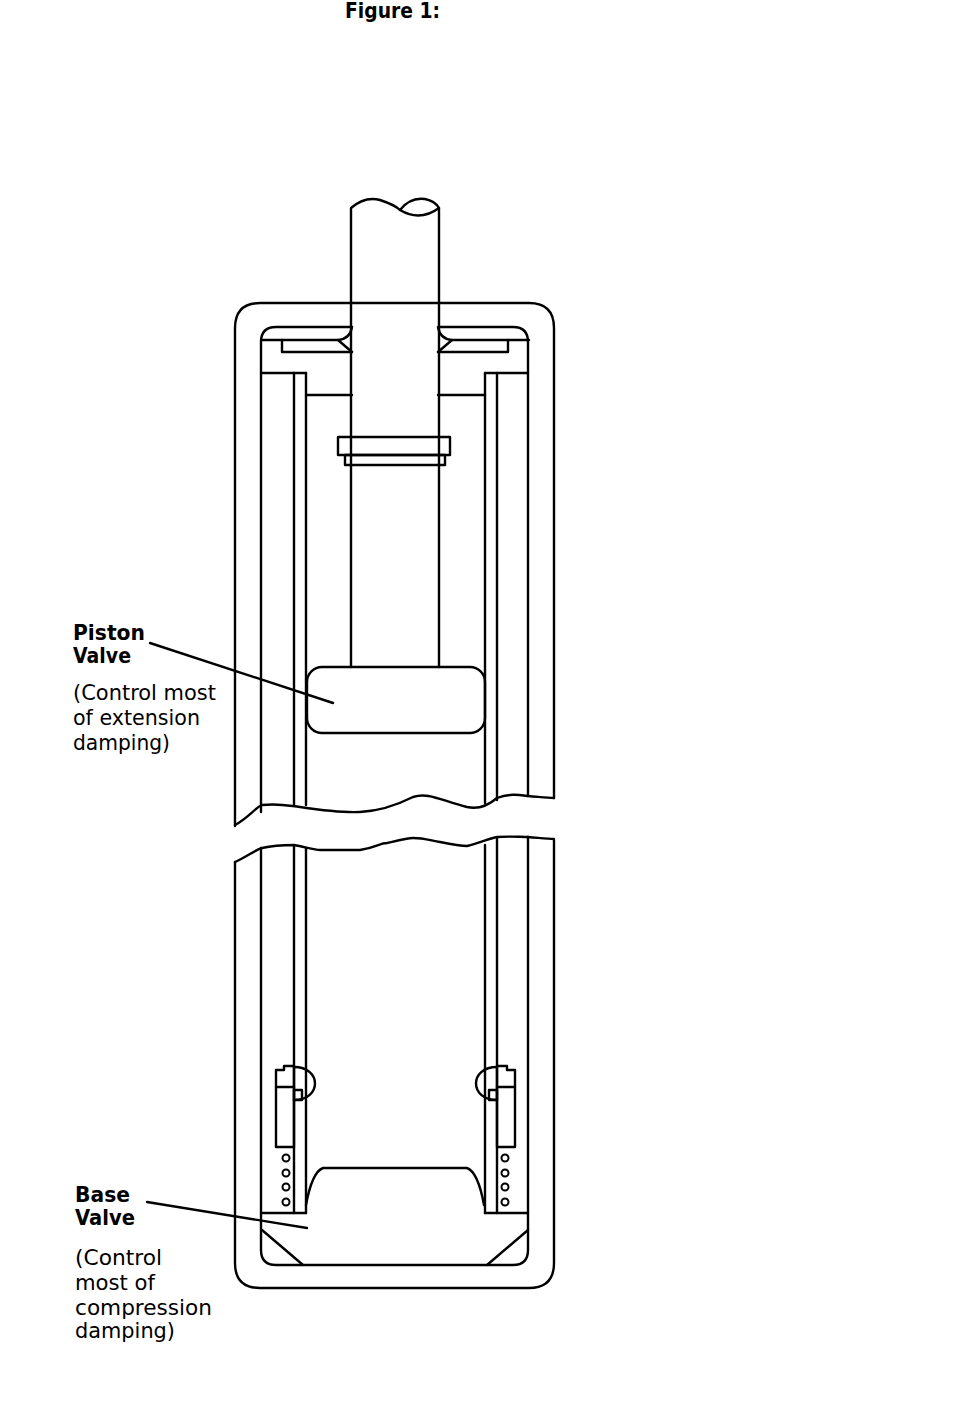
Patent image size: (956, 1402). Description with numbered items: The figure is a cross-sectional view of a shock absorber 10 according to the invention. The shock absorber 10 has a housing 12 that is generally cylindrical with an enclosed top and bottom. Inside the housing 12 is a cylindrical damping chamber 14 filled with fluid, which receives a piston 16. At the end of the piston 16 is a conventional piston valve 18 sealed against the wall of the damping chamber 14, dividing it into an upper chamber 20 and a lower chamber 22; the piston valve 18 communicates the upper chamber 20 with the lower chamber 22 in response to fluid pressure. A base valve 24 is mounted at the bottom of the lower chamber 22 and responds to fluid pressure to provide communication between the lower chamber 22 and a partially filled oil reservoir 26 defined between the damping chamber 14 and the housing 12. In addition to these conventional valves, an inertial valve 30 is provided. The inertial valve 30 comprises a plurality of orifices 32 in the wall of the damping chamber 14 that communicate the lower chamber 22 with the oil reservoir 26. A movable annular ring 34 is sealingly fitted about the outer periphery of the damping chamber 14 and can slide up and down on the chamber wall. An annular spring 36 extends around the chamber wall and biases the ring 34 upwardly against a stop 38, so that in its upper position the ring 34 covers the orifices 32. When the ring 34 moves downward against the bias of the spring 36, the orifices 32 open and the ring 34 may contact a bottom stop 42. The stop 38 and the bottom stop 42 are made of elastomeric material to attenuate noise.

The shock absorber 10 is at (212, 295).
The housing 12 is at (542, 722).
The damping chamber 14 is at (492, 943).
The piston 16 is at (417, 265).
The piston valve 18 is at (460, 693).
The upper chamber 20 is at (457, 515).
The lower chamber 22 is at (398, 1023).
The base valve 24 is at (398, 1243).
The oil reservoir 26 is at (510, 1008).
The inertial valve 30 is at (533, 1104).
The orifices 32 is at (305, 1068).
The annular ring 34 is at (508, 1140).
The spring 36 is at (508, 1172).
The stop 38 is at (508, 1078).
The bottom stop 42 is at (513, 1203).